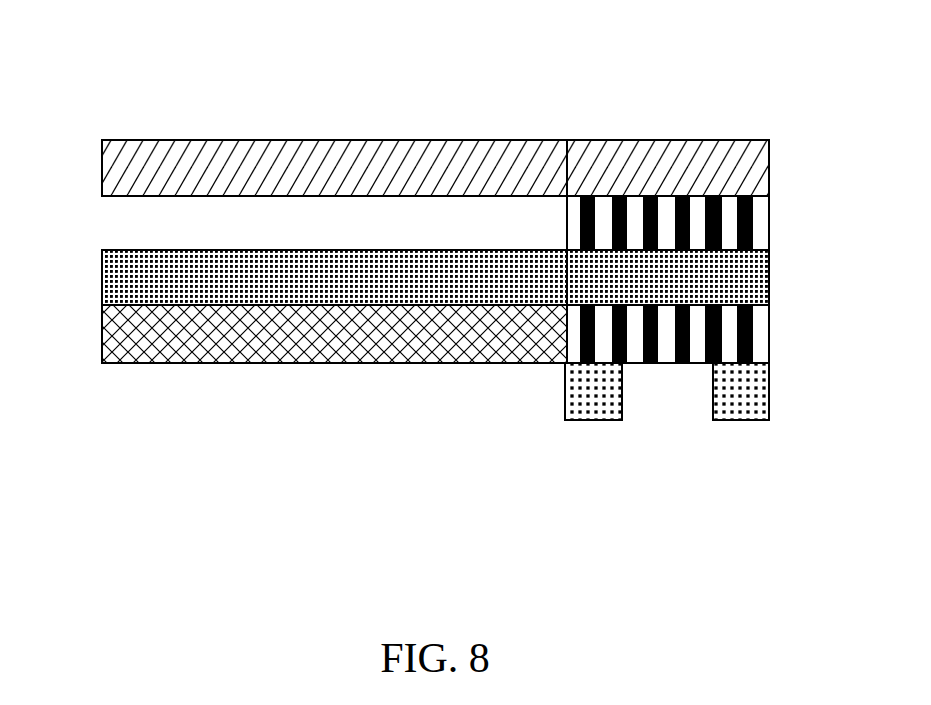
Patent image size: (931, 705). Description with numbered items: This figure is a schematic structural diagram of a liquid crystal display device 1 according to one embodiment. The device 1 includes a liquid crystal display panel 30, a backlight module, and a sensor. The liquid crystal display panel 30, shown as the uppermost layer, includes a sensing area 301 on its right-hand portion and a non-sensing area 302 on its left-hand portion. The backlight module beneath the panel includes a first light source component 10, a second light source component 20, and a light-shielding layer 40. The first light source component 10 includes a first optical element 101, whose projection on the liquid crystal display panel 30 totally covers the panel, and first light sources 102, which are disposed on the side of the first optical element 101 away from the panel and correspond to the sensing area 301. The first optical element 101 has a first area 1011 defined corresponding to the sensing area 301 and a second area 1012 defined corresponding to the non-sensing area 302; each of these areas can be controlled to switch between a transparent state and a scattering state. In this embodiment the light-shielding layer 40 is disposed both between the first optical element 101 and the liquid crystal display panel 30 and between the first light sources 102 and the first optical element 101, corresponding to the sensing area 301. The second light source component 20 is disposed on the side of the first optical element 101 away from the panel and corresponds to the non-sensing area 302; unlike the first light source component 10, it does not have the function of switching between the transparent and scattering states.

The liquid crystal display device 1 is at (423, 53).
The first light source component 10 is at (435, 403).
The first optical element 101 is at (435, 376).
The first area 1011 is at (668, 347).
The second area 1012 is at (462, 290).
The first light sources 102 is at (595, 503).
The second light source component 20 is at (130, 335).
The liquid crystal display panel 30 is at (435, 120).
The sensing area 301 is at (668, 146).
The non-sensing area 302 is at (492, 168).
The light-shielding layer 40 is at (753, 233).